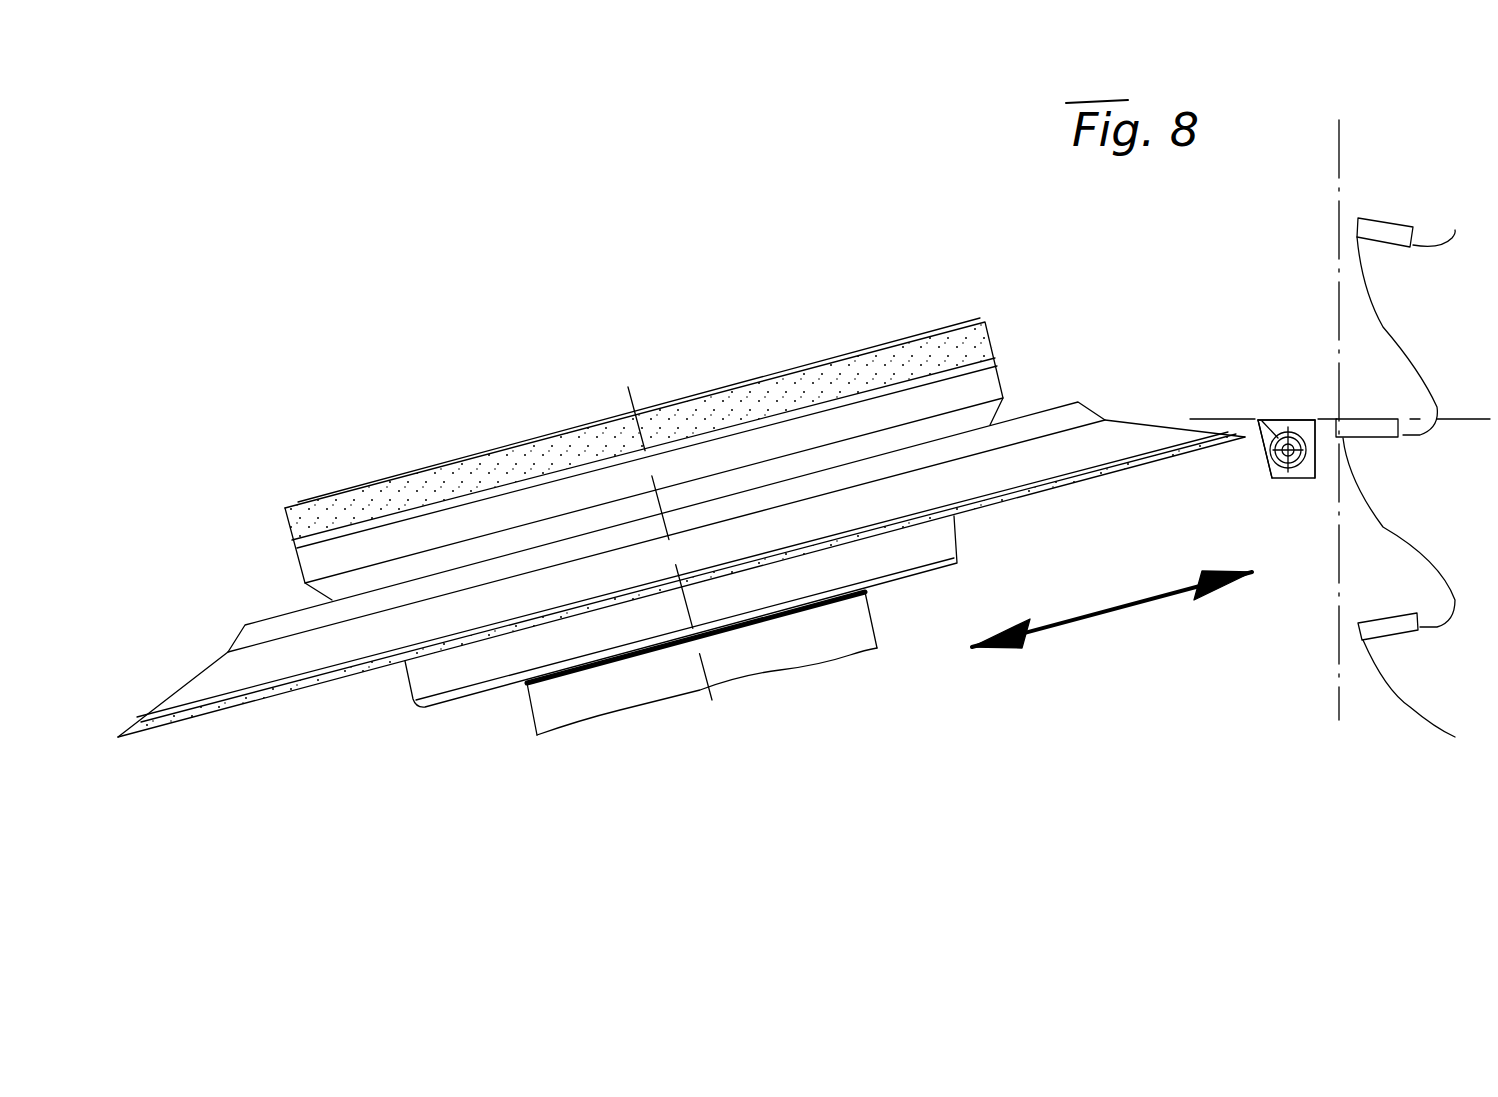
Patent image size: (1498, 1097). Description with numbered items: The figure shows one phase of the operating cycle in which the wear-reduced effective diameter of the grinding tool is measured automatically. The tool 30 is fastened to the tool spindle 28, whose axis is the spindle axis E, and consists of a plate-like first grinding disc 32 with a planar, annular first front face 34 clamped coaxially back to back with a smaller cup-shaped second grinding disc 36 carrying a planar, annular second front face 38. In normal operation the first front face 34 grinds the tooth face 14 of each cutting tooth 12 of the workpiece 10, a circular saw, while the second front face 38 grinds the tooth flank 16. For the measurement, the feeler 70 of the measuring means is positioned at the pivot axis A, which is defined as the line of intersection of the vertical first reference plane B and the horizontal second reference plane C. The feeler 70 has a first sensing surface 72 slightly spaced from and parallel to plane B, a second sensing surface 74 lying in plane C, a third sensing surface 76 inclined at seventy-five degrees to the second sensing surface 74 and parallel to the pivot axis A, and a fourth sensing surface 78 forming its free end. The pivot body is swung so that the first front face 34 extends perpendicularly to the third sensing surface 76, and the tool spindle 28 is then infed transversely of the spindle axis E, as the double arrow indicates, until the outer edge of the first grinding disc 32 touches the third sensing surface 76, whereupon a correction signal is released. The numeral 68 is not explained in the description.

The workpiece 10 is at (1425, 203).
The cutting teeth 12 is at (1383, 277).
The tooth face 14 is at (1378, 215).
The tooth flank 16 is at (1357, 222).
The tool spindle 28 is at (802, 653).
The tool 30 is at (467, 795).
The first grinding disc 32 is at (223, 672).
The first front face 34 is at (285, 693).
The second grinding disc 36 is at (314, 553).
The second front face 38 is at (366, 486).
The cutting insert 68 is at (1270, 420).
The feeler 70 is at (1268, 393).
The first sensing surface 72 is at (1317, 458).
The second sensing surface 74 is at (1298, 417).
The third sensing surface 76 is at (1263, 468).
The fourth sensing surface 78 is at (1302, 472).
The pivot axis A is at (1337, 422).
The first reference plane B is at (1338, 720).
The second reference plane C is at (1462, 418).
The spindle axis E is at (717, 713).